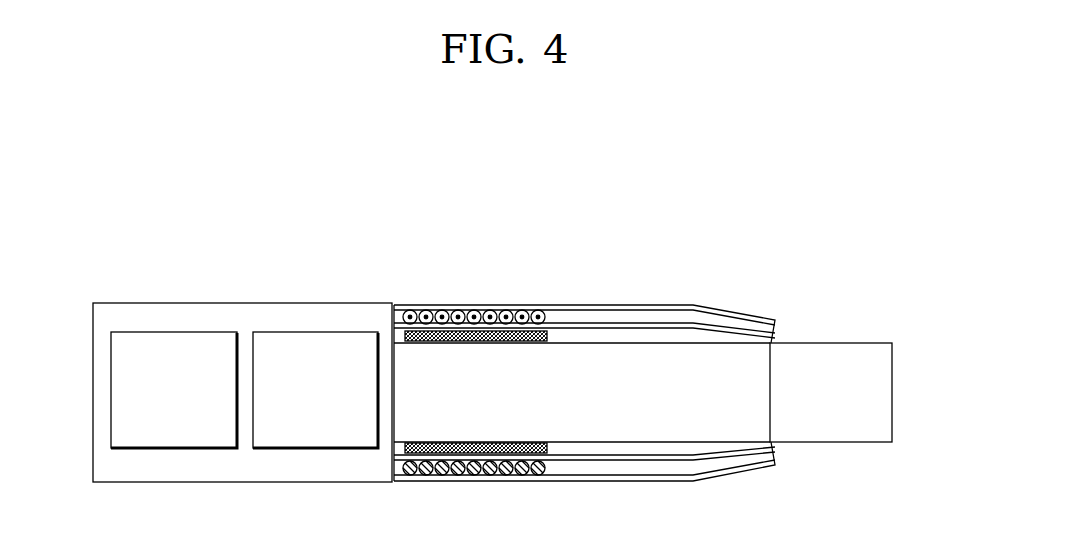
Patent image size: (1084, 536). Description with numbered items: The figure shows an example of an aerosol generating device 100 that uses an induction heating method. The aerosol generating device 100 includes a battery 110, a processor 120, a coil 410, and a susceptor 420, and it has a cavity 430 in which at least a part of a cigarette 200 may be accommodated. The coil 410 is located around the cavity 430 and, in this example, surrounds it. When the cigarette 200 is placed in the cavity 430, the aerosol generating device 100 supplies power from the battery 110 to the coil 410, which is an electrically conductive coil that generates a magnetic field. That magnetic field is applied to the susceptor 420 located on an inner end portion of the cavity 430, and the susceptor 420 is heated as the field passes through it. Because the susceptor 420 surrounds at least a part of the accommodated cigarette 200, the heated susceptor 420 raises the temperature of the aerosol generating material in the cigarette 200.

The aerosol generating device 100 is at (607, 297).
The battery 110 is at (173, 332).
The processor 120 is at (315, 332).
The cigarette 200 is at (830, 332).
The coil 410 is at (541, 306).
The susceptor 420 is at (470, 335).
The cavity 430 is at (667, 335).